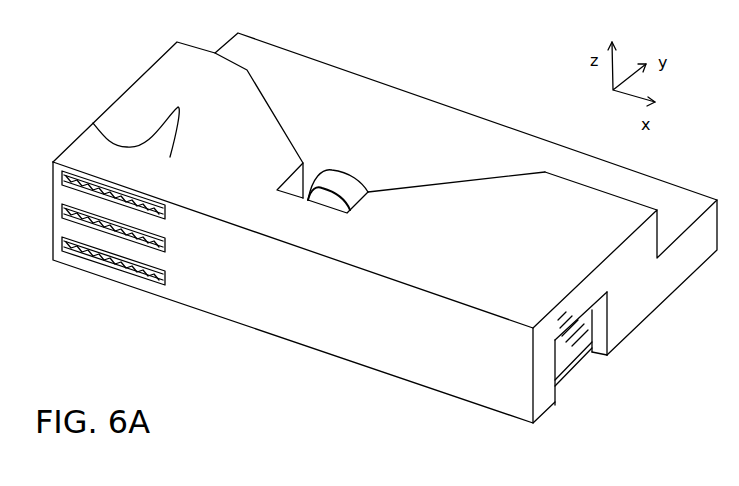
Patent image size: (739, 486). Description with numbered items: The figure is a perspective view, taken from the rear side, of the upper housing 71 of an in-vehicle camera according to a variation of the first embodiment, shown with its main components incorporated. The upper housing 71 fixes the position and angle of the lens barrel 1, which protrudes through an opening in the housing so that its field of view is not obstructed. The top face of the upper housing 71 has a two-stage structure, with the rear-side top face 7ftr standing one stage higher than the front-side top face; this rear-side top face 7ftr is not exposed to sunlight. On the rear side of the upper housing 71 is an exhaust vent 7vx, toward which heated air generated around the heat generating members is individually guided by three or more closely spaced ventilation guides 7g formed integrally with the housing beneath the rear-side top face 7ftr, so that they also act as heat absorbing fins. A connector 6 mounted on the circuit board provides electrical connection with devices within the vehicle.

The upper housing 71 is at (462, 127).
The rear-side top face 7ftr is at (93, 123).
The lens barrel 1 is at (338, 178).
The exhaust vent 7vx is at (55, 243).
The ventilation guides 7g is at (130, 258).
The connector 6 is at (567, 338).